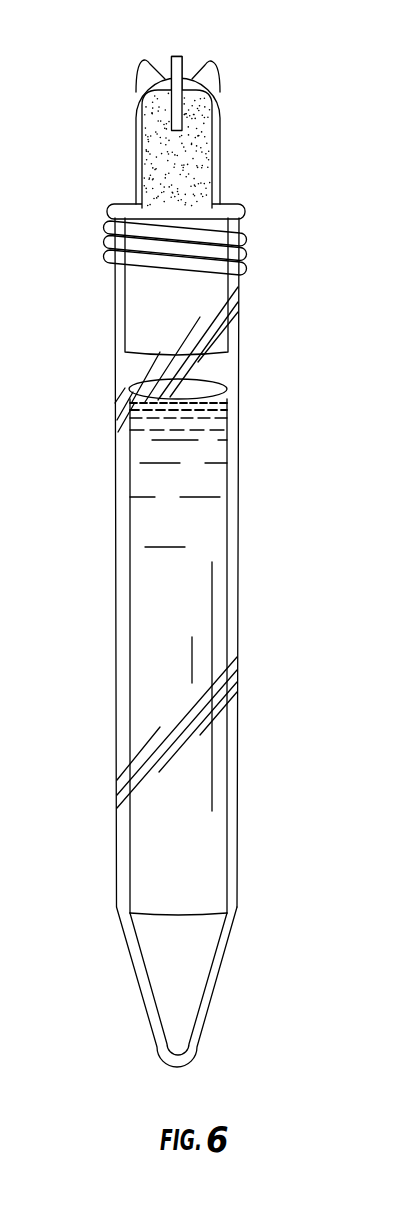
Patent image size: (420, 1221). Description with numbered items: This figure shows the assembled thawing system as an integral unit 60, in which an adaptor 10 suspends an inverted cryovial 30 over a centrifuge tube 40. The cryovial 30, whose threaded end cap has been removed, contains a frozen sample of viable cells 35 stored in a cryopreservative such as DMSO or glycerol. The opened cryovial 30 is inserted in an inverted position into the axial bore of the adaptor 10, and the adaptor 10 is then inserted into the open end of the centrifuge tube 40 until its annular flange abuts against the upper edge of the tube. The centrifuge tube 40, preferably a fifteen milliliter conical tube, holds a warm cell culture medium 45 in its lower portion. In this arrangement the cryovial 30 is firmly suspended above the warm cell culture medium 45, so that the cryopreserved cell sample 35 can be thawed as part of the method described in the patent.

The adaptor 10 is at (127, 297).
The cryovial 30 is at (214, 78).
The frozen sample of viable cells 35 is at (207, 161).
The centrifuge tube 40 is at (237, 585).
The warm cell culture medium 45 is at (199, 971).
The integral unit 60 is at (286, 382).